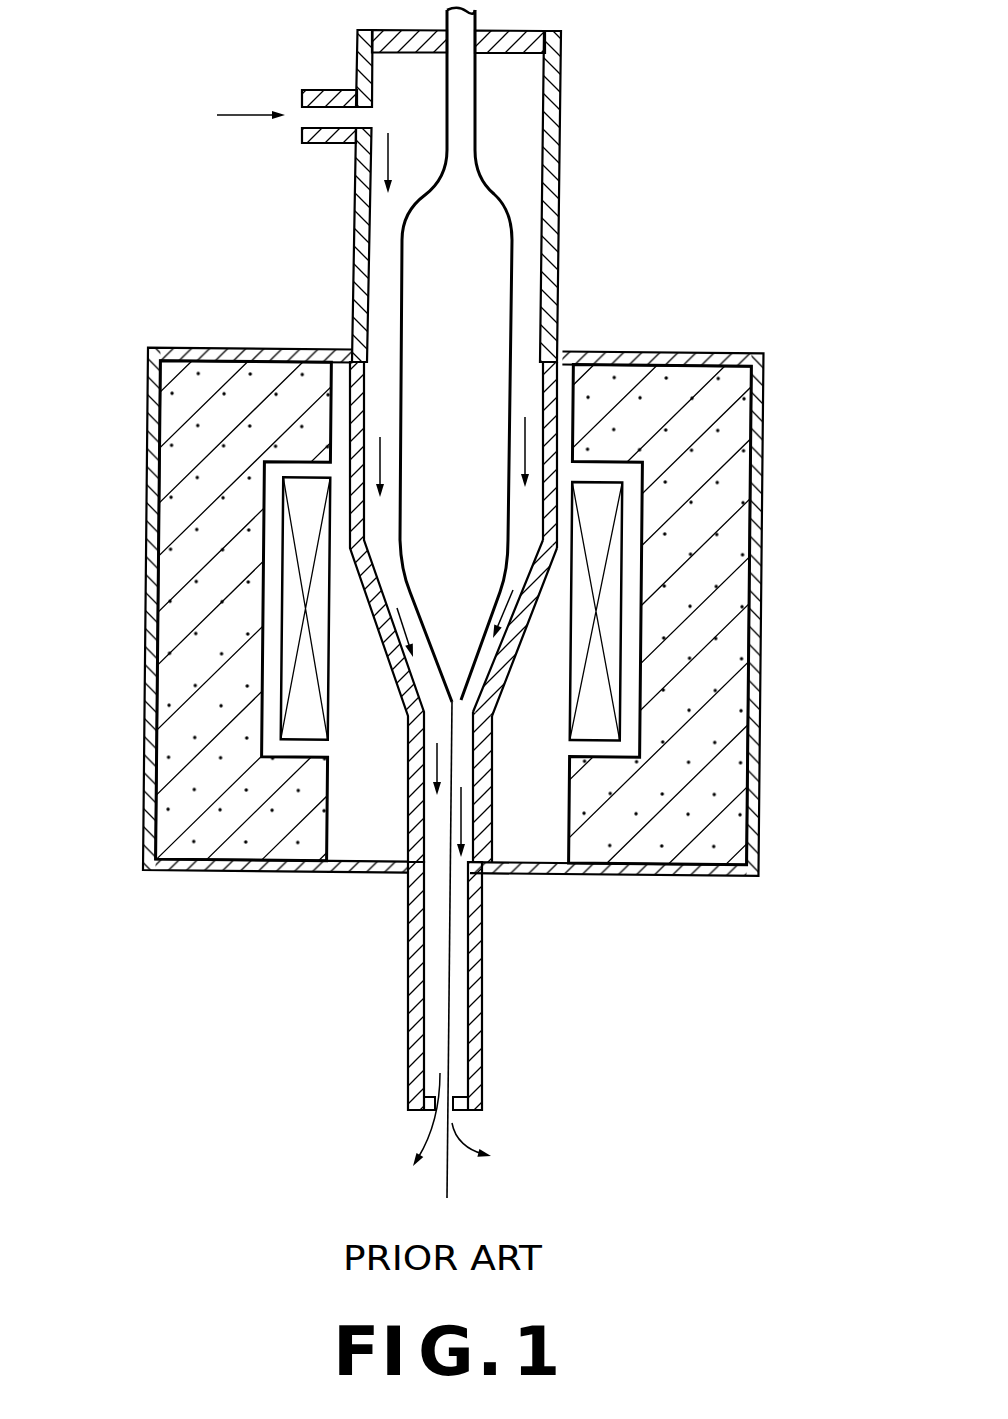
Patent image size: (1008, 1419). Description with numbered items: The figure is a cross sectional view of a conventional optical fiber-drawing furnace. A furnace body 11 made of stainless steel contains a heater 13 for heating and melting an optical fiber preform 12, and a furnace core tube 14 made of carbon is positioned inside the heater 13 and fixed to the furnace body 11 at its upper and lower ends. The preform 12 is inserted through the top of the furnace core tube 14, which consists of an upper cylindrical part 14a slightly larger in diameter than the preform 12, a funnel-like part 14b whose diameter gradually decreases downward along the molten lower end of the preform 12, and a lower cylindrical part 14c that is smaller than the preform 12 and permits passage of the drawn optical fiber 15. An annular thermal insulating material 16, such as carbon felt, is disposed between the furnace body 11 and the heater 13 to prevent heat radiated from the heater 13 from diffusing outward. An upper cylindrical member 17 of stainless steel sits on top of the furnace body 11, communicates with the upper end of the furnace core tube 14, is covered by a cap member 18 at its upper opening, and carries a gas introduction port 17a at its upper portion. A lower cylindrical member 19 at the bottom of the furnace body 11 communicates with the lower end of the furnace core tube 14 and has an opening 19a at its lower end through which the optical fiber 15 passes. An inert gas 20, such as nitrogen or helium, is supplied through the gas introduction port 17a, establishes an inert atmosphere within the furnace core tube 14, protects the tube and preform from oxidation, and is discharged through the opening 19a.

The furnace body 11 is at (756, 353).
The optical fiber preform 12 is at (487, 268).
The heater 13 is at (292, 636).
The furnace core tube 14 is at (571, 438).
The upper cylindrical part 14a is at (557, 474).
The funnel-like part 14b is at (543, 588).
The lower cylindrical part 14c is at (486, 793).
The optical fiber 15 is at (447, 970).
The thermal insulating material 16 is at (172, 431).
The upper cylindrical member 17 is at (561, 118).
The gas introduction port 17a is at (322, 92).
The cap member 18 is at (561, 37).
The lower cylindrical member 19 is at (483, 1007).
The opening 19a is at (460, 1090).
The inert gas 20 is at (242, 116).